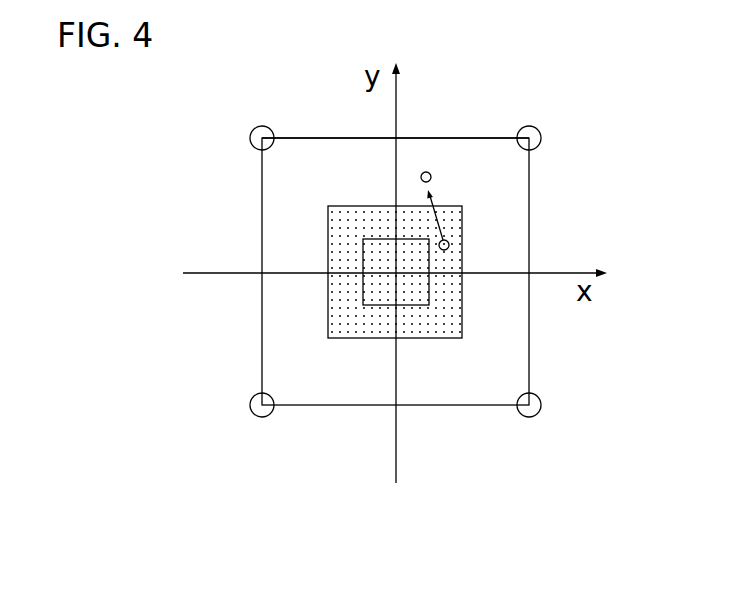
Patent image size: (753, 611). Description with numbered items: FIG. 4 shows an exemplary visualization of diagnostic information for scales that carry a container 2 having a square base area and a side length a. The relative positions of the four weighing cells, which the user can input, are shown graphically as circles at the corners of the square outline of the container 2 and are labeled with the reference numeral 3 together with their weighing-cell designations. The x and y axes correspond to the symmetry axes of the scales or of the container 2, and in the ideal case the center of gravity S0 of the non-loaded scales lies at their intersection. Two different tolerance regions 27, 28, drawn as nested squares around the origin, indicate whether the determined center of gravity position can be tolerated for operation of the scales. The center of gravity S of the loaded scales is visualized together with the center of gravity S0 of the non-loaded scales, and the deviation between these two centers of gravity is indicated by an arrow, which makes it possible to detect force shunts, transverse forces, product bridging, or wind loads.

The container 2 is at (530, 349).
The alignment marks W1-W4 3 is at (250, 128).
The tolerance region 27 is at (378, 237).
The tolerance region 28 is at (349, 339).
The side length a is at (440, 136).
The center of gravity of the loaded scales S is at (432, 177).
The center of gravity of the non-loaded scales S0 is at (450, 247).